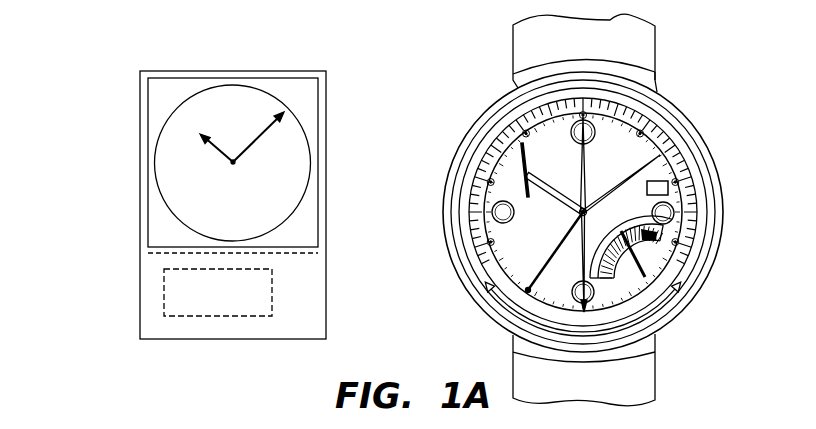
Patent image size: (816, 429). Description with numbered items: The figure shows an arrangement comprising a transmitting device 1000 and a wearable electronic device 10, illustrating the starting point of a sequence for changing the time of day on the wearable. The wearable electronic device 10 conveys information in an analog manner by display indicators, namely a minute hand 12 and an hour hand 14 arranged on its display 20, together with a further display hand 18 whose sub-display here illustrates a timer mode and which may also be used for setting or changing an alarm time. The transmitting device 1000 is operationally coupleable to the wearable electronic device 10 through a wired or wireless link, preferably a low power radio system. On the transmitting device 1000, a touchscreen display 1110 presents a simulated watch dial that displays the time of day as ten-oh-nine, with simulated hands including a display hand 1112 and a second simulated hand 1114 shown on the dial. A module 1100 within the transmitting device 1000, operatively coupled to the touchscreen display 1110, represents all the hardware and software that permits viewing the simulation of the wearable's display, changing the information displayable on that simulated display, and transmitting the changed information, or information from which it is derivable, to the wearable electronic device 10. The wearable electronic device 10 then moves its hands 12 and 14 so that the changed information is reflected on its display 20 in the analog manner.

The transmitting device 1000 is at (218, 195).
The module 1100 is at (177, 293).
The touchscreen display 1110 is at (290, 91).
The display hand 1112 is at (257, 142).
The hour hand image 1114 is at (215, 150).
The wearable electronic device 10 is at (603, 210).
The minute hand 12 is at (682, 160).
The hour hand 14 is at (540, 182).
The display 20 is at (607, 142).
The display hand 18 is at (653, 257).